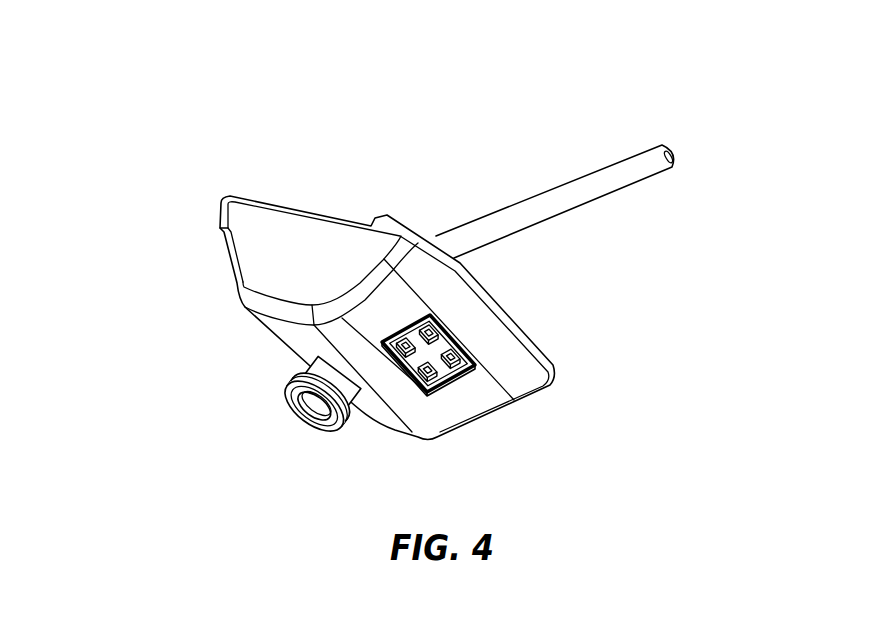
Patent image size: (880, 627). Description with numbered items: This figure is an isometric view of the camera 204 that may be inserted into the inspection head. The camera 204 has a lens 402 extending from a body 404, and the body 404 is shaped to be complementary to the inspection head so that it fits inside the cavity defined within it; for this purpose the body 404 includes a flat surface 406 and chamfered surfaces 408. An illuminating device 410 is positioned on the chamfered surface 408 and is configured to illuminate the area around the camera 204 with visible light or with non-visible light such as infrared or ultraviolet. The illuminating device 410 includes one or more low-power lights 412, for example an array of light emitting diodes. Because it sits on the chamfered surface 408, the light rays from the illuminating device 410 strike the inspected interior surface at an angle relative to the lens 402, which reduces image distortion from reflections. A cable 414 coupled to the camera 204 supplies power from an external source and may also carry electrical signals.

The camera 204 is at (183, 188).
The lens 402 is at (300, 403).
The body 404 is at (285, 235).
The flat surface 406 is at (298, 340).
The chamfered surface 408 is at (395, 313).
The illuminating device 410 is at (458, 382).
The lights 412 is at (457, 345).
The cable 414 is at (557, 200).